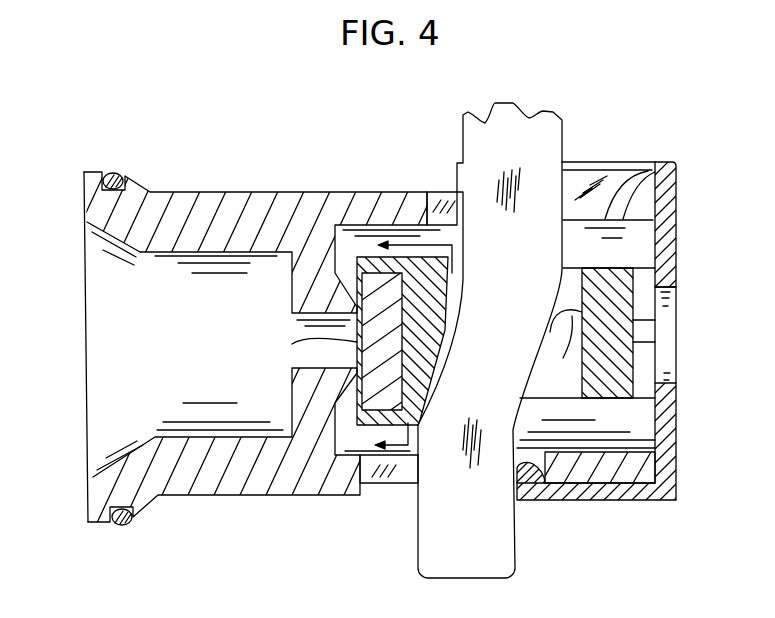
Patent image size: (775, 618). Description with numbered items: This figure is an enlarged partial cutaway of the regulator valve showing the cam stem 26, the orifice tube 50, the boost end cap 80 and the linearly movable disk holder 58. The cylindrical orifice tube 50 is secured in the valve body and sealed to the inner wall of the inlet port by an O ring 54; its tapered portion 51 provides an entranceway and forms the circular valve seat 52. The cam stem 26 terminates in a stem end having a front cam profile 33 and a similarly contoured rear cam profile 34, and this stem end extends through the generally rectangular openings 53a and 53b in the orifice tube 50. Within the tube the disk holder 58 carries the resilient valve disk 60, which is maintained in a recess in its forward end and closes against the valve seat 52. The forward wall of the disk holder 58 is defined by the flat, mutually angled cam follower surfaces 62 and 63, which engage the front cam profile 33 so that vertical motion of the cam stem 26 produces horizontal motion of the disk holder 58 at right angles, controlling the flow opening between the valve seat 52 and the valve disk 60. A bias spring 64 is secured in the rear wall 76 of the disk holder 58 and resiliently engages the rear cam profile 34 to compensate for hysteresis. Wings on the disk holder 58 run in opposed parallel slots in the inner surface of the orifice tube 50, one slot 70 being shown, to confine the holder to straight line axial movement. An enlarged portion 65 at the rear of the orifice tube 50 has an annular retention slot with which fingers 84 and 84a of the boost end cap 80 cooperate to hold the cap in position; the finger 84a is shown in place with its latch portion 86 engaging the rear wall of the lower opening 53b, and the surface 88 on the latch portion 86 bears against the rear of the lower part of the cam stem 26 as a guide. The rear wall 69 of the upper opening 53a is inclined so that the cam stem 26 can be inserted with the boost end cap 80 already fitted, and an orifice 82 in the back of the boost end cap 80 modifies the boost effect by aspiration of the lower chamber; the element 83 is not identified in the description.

The cam stem 26 is at (565, 134).
The front cam profile 33 is at (418, 496).
The rear cam profile 34 is at (516, 518).
The orifice tube 50 is at (257, 188).
The tapered portion 51 is at (105, 332).
The valve seat 52 is at (300, 325).
The upper rectangular opening 53a is at (433, 192).
The lower rectangular opening 53b is at (372, 485).
The O ring 54 is at (117, 175).
The disk holder 58 is at (403, 257).
The valve disk 60 is at (303, 343).
The cam follower surface 62 is at (433, 350).
The cam follower surface 63 is at (455, 290).
The bias spring 64 is at (561, 349).
The enlarged portion 65 is at (456, 178).
The rear wall of upper slot 69 is at (643, 162).
The slot 70 is at (643, 317).
The rear wall 76 is at (578, 385).
The boost end cap 80 is at (680, 189).
The orifice 82 is at (672, 340).
The window 83 is at (677, 225).
The fingers 84 is at (607, 162).
The finger 84a is at (632, 502).
The latch portion 86 is at (537, 501).
The surface 88 is at (513, 490).